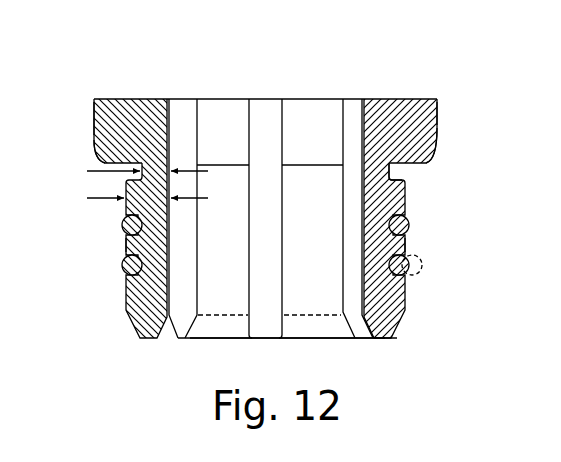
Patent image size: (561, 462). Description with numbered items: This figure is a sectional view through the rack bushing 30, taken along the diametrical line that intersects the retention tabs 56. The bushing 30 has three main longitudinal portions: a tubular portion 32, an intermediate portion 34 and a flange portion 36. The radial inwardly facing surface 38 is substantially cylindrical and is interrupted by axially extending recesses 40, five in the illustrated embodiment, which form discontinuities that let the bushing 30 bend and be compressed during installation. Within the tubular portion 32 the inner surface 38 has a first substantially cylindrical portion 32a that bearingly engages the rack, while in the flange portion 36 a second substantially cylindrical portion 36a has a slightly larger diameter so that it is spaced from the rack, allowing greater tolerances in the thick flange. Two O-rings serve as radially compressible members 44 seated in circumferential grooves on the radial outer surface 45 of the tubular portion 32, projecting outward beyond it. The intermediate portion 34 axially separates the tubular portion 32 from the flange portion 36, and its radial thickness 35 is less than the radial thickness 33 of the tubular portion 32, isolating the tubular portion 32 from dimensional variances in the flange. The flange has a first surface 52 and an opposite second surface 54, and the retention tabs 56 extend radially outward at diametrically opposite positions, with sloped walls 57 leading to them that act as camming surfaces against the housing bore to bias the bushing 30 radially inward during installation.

The rack bushing 30 is at (124, 60).
The tubular portion 32 is at (406, 307).
The first substantially cylindrical portion 32a is at (310, 210).
The radial thickness of tubular portion 33 is at (227, 127).
The intermediate portion 34 is at (393, 173).
The radial thickness of intermediate portion 35 is at (185, 170).
The flange portion 36 is at (443, 120).
The second substantially cylindrical portion 36a is at (318, 110).
The radial inwardly facing surface 38 is at (317, 288).
The axially extending recesses 40 is at (182, 107).
The radially compressible member 44 is at (123, 223).
The radial outer surface 45 is at (123, 243).
The first surface 52 is at (87, 168).
The second surface 54 is at (120, 99).
The retention tabs 56 is at (93, 112).
The sloped walls 57 is at (93, 140).